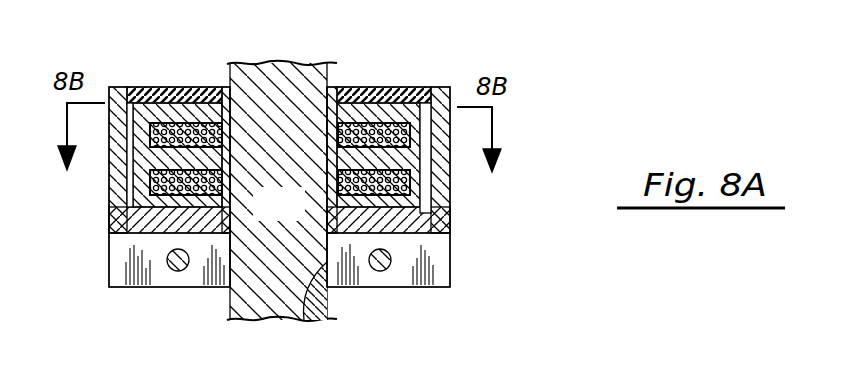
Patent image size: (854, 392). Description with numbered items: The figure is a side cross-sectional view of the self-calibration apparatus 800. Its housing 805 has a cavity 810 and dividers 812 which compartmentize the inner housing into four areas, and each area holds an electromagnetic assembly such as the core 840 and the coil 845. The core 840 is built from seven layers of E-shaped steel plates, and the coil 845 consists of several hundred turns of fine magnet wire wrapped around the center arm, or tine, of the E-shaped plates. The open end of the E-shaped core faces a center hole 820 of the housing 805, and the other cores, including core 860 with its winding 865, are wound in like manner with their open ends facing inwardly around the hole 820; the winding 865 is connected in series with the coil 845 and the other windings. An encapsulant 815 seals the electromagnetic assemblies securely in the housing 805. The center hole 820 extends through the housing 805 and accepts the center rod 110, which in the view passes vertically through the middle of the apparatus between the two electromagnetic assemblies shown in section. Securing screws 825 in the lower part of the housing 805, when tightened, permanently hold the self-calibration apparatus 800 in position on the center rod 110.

The center rod 110 is at (300, 218).
The self-calibration apparatus 800 is at (530, 133).
The housing 805 is at (124, 238).
The cavity 810 is at (132, 103).
The dividers 812 is at (233, 137).
The encapsulant 815 is at (180, 105).
The center hole 820 is at (317, 322).
The securing screws 825 is at (187, 270).
The core 840 is at (182, 152).
The coil 845 is at (204, 108).
The core 860 is at (378, 157).
The winding 865 is at (363, 100).